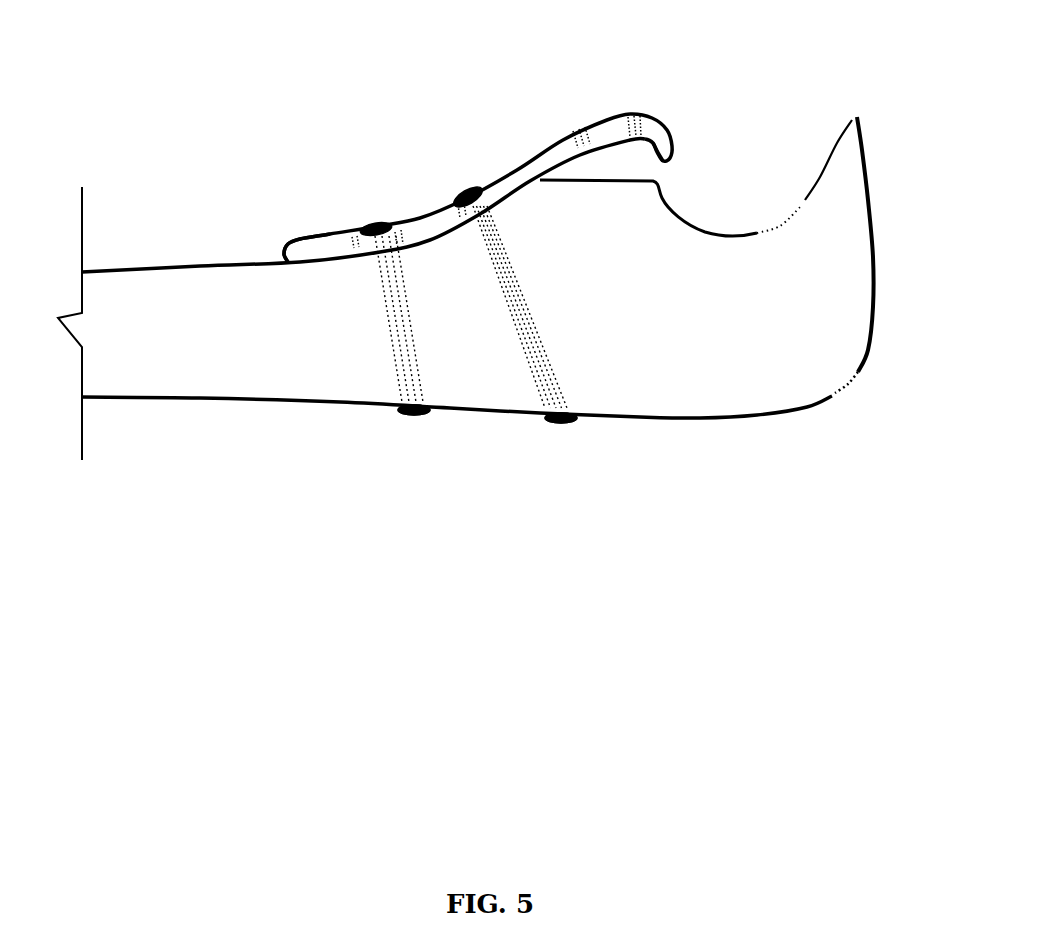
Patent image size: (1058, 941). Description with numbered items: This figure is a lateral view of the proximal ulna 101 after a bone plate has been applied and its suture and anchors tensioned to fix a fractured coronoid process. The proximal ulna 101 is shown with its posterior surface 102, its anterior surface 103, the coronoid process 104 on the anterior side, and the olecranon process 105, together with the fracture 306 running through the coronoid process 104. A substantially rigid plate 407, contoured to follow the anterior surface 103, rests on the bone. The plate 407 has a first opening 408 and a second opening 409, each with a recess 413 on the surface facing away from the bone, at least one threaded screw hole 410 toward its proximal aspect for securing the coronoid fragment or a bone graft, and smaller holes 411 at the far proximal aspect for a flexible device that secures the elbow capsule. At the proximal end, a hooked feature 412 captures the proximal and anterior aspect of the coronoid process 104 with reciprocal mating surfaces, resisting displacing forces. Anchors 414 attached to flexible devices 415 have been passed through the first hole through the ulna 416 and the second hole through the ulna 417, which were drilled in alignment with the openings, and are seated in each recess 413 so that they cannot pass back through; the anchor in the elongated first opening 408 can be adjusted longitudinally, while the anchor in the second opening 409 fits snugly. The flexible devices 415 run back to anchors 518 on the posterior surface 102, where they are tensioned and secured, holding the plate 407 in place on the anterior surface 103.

The proximal ulna 101 is at (153, 323).
The posterior surface 102 is at (207, 398).
The anterior surface 103 is at (203, 265).
The coronoid process 104 is at (658, 169).
The olecranon process 105 is at (860, 150).
The fracture 306 is at (658, 185).
The plate 407 is at (283, 246).
The first opening 408 is at (353, 245).
The second opening 409 is at (483, 200).
The screw hole 410 is at (575, 130).
The smaller holes 411 is at (633, 117).
The hooked feature 412 is at (672, 143).
The recess 413 is at (482, 188).
The anchor 414 is at (458, 198).
The flexible device 415 is at (402, 340).
The first hole through the ulna 416 is at (390, 373).
The second hole through the ulna 417 is at (557, 378).
The anchors 518 is at (415, 413).